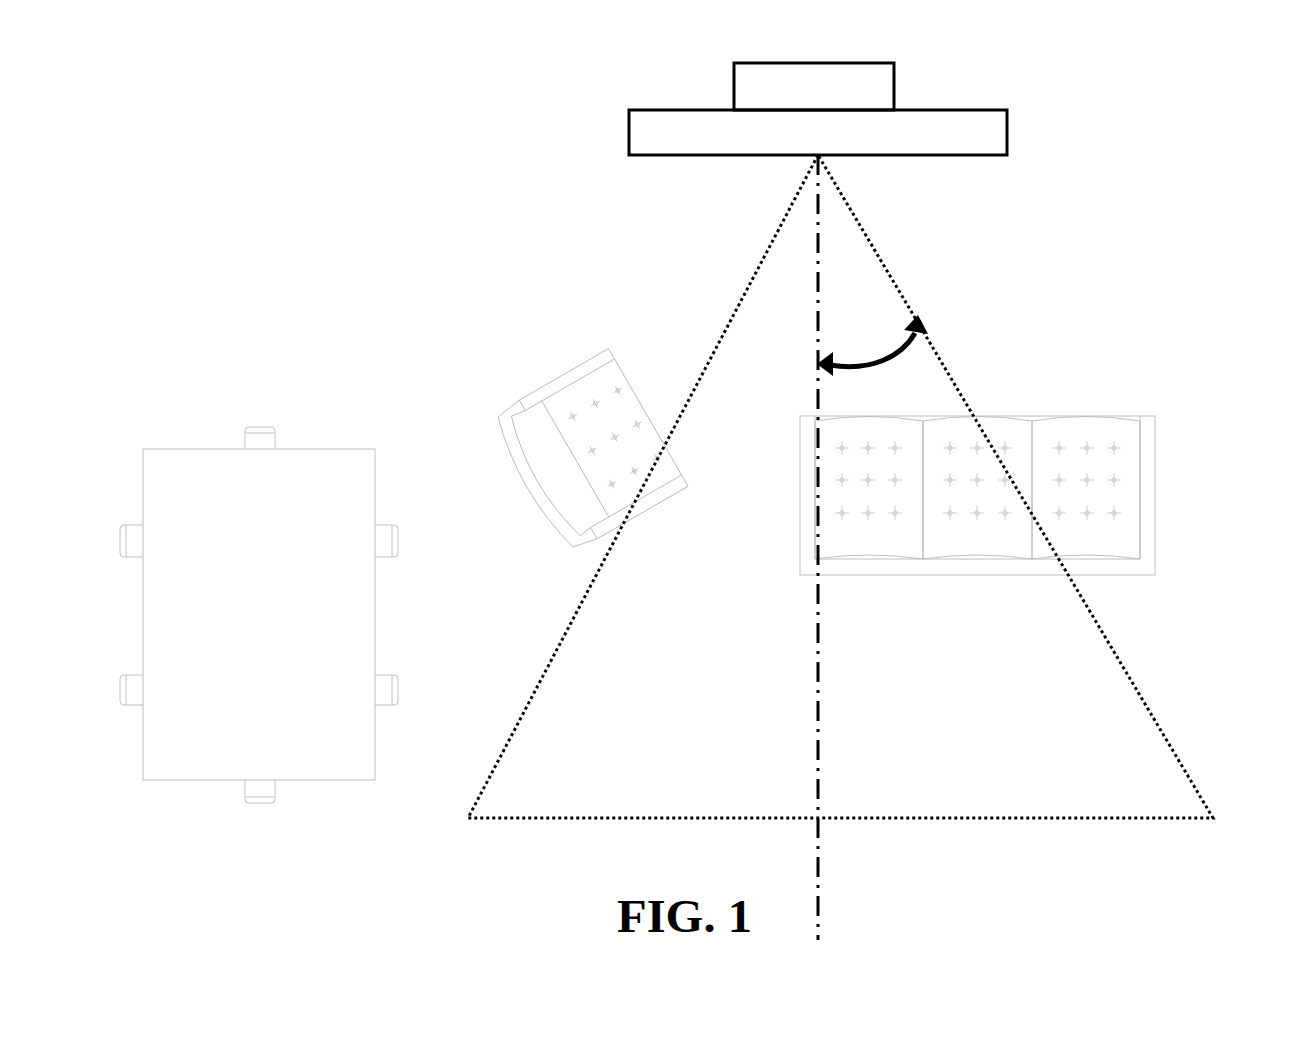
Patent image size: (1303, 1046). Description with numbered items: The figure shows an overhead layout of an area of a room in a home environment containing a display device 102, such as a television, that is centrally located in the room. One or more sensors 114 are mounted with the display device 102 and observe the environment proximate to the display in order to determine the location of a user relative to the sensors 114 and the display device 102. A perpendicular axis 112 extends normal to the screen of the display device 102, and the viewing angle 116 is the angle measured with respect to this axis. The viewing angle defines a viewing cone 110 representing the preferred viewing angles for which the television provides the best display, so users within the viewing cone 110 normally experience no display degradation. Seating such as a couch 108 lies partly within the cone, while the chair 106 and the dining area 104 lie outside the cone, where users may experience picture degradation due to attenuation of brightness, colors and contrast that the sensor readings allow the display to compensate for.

The display device 102 is at (641, 110).
The dining area 104 is at (168, 449).
The chair 106 is at (568, 373).
The couch 108 is at (1114, 416).
The viewing cone 110 is at (727, 330).
The perpendicular axis 112 is at (819, 885).
The sensors 114 is at (895, 85).
The viewing angle 116 is at (874, 360).